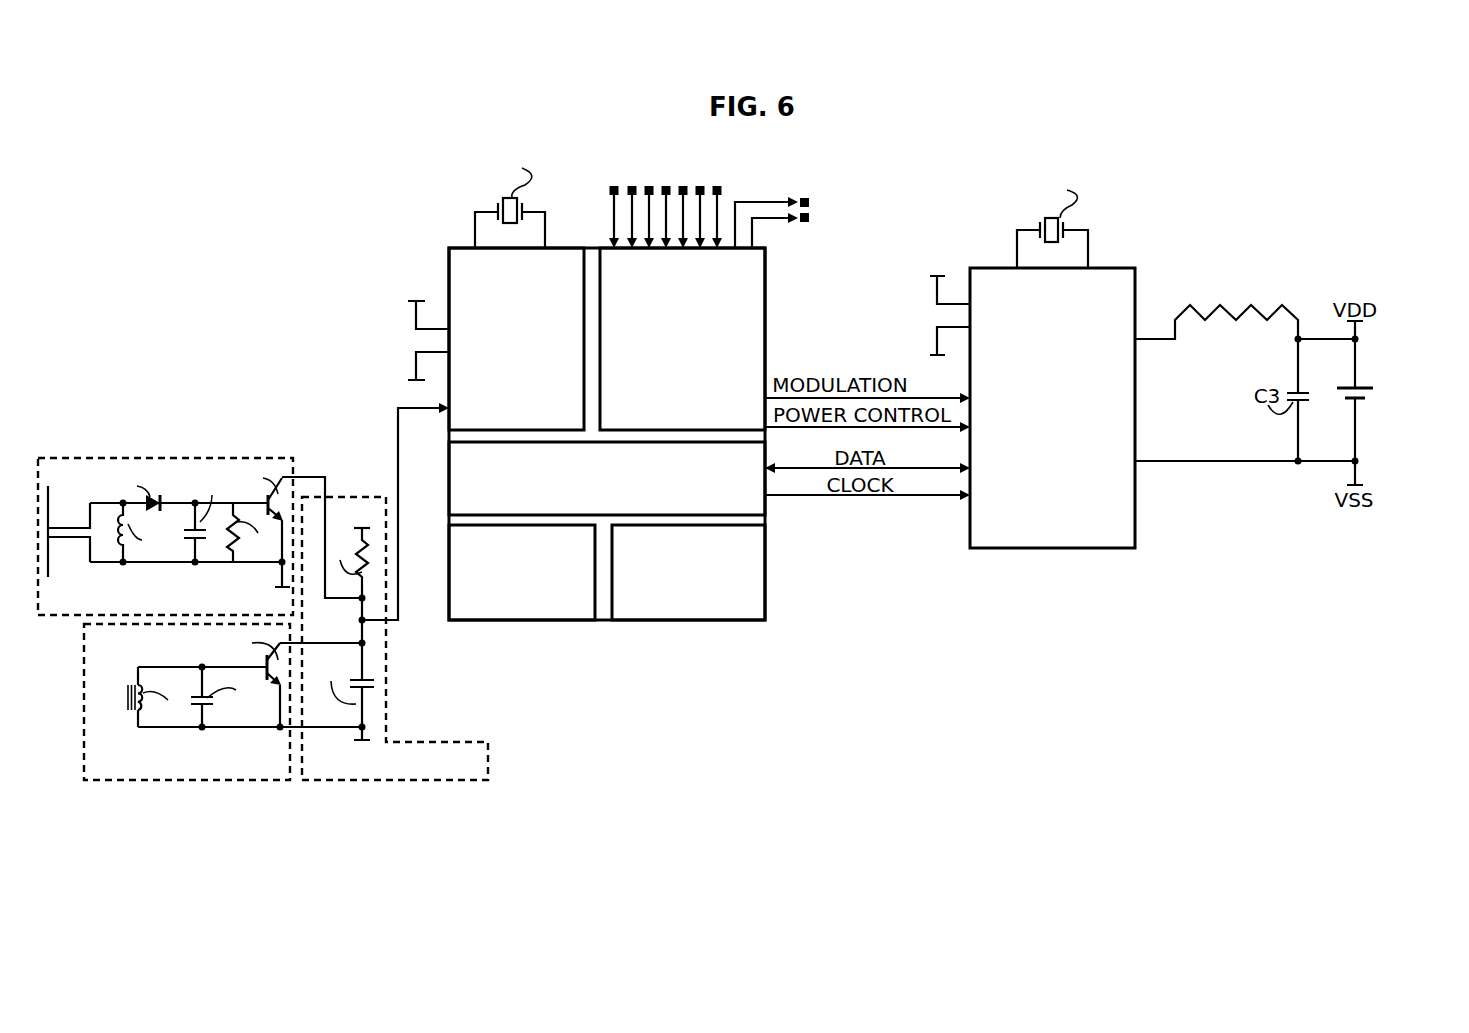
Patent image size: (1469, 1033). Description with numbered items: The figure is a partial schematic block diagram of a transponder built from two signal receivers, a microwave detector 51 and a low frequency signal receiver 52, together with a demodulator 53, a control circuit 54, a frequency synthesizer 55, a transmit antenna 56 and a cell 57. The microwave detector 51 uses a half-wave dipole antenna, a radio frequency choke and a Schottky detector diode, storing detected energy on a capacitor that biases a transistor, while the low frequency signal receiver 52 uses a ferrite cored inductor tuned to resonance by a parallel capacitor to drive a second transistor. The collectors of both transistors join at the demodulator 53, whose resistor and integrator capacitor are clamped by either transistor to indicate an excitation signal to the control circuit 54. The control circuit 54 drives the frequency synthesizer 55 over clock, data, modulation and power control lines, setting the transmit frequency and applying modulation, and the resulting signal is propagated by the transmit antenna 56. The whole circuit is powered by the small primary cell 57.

The microwave detector 51 is at (116, 458).
The low frequency signal receiver 52 is at (155, 782).
The demodulator 53 is at (424, 782).
The control circuit 54 is at (722, 621).
The frequency synthesizer 55 is at (1136, 497).
The transmit antenna 56 is at (1300, 314).
The cell 57 is at (1368, 388).